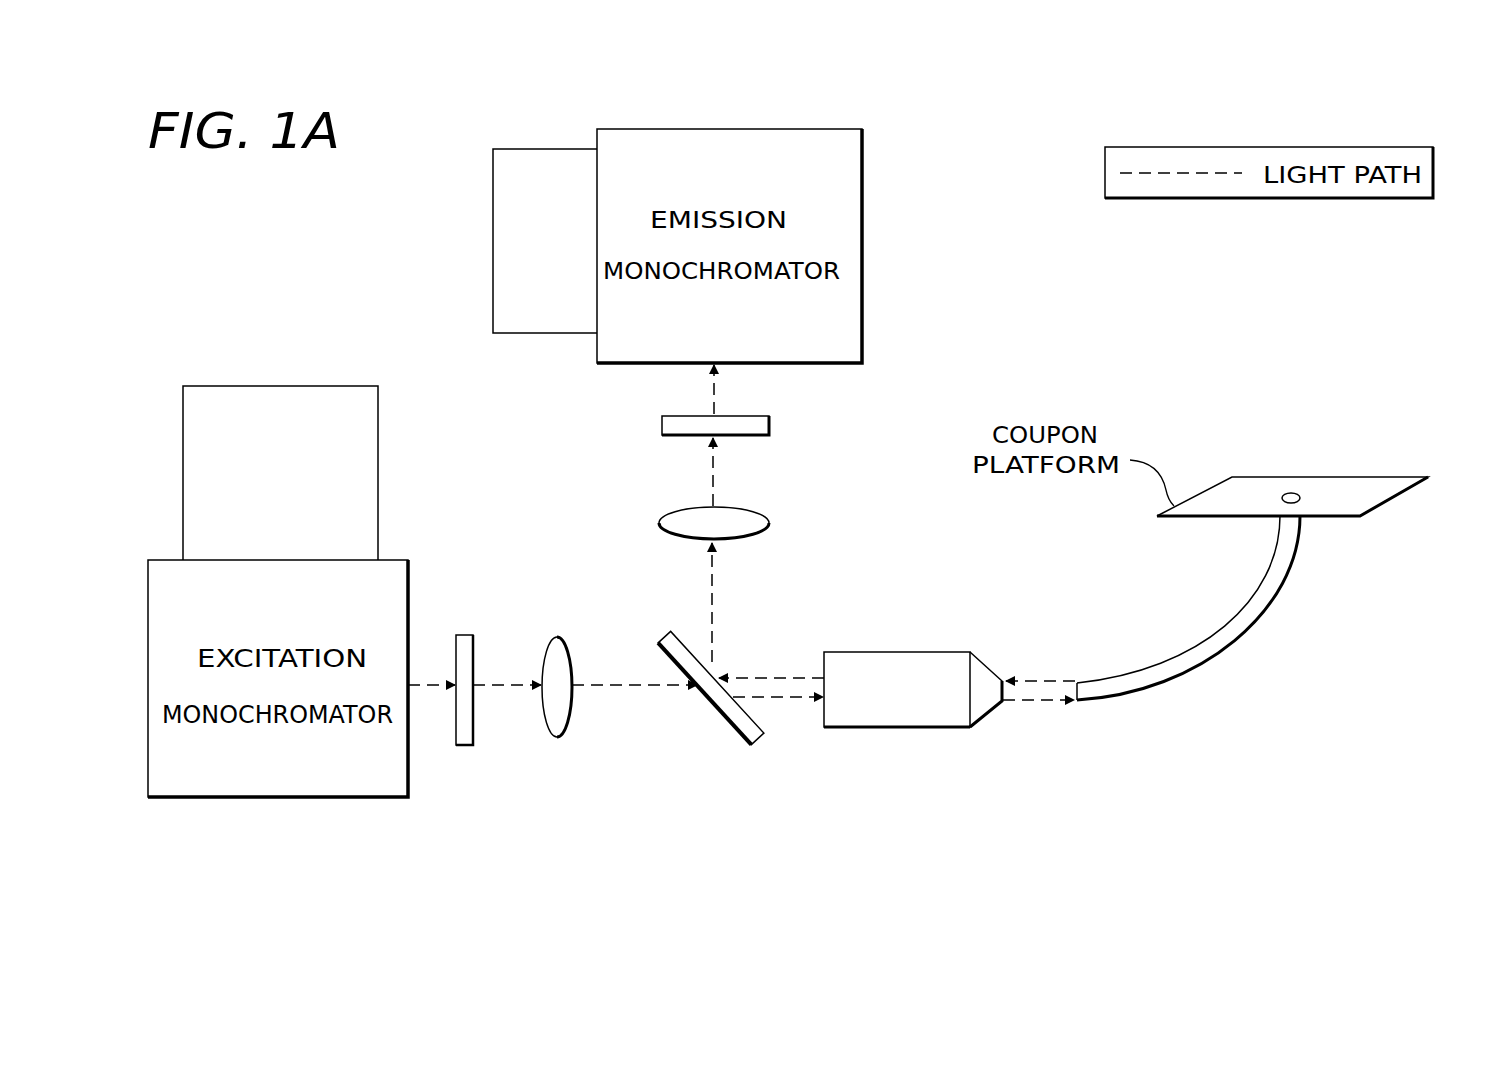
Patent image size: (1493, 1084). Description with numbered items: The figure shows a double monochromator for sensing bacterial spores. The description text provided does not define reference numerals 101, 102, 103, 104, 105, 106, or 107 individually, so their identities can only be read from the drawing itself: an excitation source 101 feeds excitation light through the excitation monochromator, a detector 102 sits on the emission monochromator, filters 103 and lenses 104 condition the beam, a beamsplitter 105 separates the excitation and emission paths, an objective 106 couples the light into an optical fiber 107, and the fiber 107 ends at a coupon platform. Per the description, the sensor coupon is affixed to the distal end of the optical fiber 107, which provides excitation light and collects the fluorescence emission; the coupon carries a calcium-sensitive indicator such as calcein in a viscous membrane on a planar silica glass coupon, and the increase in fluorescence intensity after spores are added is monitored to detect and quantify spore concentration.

The Xe light source 101 is at (187, 386).
The PMT (photomultiplier tube) 102 is at (493, 218).
The filter (bandpass filter) 103 is at (488, 783).
The focusing lens 104 is at (562, 640).
The beamsplitter 105 is at (722, 717).
The objective lens 106 is at (982, 727).
The optical fiber 107 is at (1273, 593).